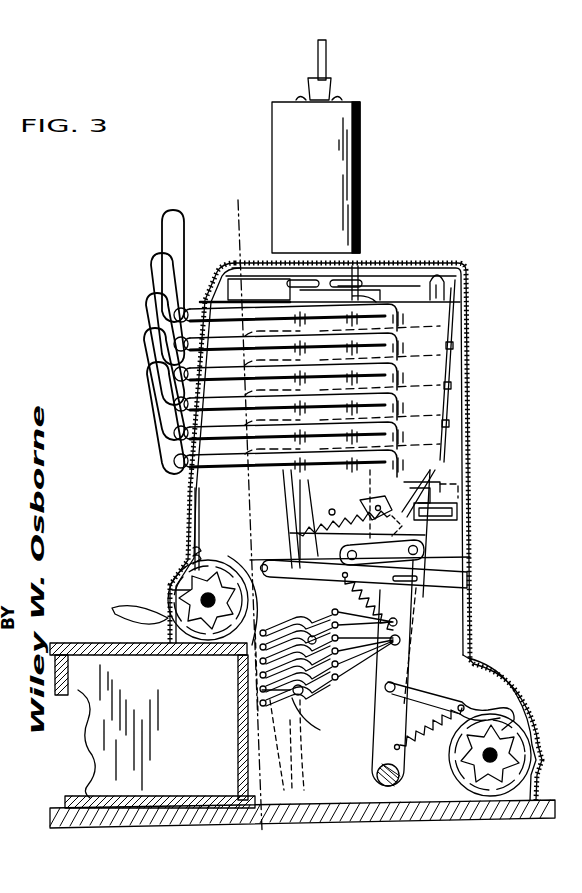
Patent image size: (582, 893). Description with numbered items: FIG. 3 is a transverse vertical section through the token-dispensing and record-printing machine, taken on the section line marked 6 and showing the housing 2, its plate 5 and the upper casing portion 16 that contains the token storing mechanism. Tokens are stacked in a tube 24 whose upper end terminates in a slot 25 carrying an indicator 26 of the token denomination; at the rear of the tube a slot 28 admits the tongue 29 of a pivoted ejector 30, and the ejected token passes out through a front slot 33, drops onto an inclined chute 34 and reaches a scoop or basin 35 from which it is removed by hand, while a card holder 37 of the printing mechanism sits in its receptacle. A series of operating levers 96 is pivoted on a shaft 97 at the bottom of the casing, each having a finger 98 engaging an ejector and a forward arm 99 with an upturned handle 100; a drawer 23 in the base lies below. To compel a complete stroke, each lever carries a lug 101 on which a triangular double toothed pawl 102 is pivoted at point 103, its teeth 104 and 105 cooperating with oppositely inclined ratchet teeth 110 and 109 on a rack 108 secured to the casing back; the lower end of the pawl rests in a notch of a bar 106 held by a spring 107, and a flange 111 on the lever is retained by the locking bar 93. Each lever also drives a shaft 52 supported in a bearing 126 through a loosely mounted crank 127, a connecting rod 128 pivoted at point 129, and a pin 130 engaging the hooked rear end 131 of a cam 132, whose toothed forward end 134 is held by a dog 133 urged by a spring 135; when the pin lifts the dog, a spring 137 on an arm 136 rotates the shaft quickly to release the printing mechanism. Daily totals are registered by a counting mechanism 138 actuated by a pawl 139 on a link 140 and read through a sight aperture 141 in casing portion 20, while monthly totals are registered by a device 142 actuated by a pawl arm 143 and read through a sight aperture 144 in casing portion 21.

The housing 2 is at (228, 272).
The frame plate 5 is at (452, 486).
The section line 6 is at (249, 512).
The casing portion 16 is at (361, 160).
The casing portion 20 is at (190, 556).
The casing portion 21 is at (518, 688).
The drawer 23 is at (100, 645).
The tube 24 is at (282, 278).
The slot 25 is at (305, 86).
The indicator 26 is at (329, 60).
The slot 28 is at (343, 279).
The tongue 29 is at (400, 284).
The ejector 30 is at (456, 392).
The slot 33 is at (300, 280).
The inclined chute 34 is at (245, 291).
The scoop or basin 35 is at (110, 612).
The card holder 37 is at (340, 294).
The shaft 52 is at (313, 713).
The locking bar 93 is at (458, 508).
The lever 96 is at (410, 490).
The shaft 97 is at (400, 784).
The finger 98 is at (446, 290).
The arm 99 is at (148, 320).
The handle 100 is at (164, 228).
The lug 101 is at (330, 512).
The double toothed pawl 102 is at (375, 505).
The pivot point 103 is at (414, 489).
The tooth 104 is at (416, 497).
The tooth 105 is at (360, 506).
The bar 106 is at (426, 556).
The spring 107 is at (345, 548).
The rack 108 is at (430, 537).
The ratchet teeth 109 is at (300, 520).
The ratchet teeth 110 is at (392, 505).
The flange 111 is at (414, 627).
The bearing 126 is at (366, 796).
The crank 127 is at (340, 600).
The connecting rod 128 is at (372, 612).
The pivot point 129 is at (400, 642).
The pin 130 is at (312, 616).
The hooked rear end 131 is at (318, 677).
The cam 132 is at (304, 694).
The dog 133 is at (262, 706).
The toothed forward end 134 is at (258, 676).
The spring 135 is at (262, 742).
The arm 136 is at (297, 755).
The spring 137 is at (370, 778).
The counting mechanism 138 is at (180, 578).
The pawl 139 is at (240, 560).
The link 140 is at (446, 590).
The sight aperture 141 is at (170, 590).
The monthly total device 142 is at (524, 738).
The pawl arm 143 is at (452, 694).
The sight aperture 144 is at (531, 750).